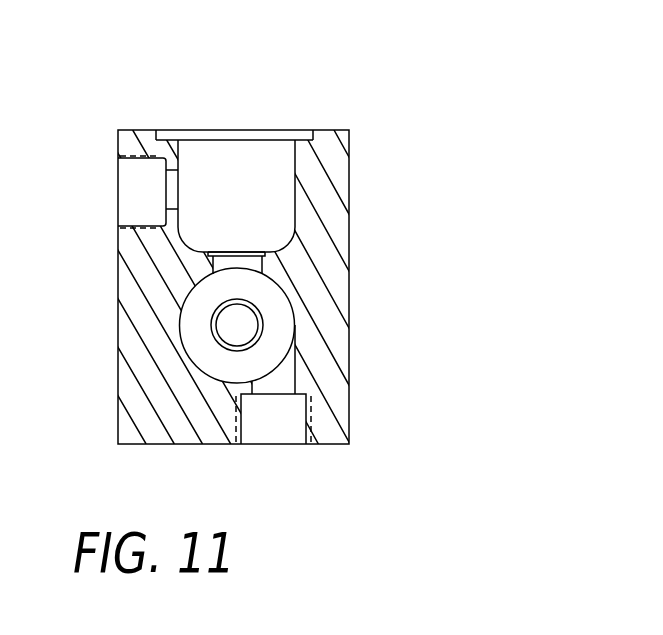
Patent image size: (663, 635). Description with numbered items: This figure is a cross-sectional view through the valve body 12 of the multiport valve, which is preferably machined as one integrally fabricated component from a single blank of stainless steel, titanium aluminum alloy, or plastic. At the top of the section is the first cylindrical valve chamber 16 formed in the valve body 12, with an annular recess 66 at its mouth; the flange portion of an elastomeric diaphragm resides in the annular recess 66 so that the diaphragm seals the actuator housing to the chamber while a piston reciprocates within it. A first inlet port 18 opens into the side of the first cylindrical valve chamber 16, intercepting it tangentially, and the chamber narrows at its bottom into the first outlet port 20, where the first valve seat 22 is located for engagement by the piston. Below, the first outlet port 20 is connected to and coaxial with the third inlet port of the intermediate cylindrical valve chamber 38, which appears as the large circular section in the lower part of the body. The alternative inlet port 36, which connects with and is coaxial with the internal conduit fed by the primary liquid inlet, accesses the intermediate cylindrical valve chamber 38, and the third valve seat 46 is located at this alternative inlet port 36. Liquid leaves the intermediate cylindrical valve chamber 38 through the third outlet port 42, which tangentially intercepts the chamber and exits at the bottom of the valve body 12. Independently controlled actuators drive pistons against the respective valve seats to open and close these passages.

The valve body 12 is at (405, 98).
The annular recess 66 is at (205, 132).
The first cylindrical valve chamber 16 is at (272, 158).
The first inlet port 18 is at (172, 183).
The first outlet port 20 is at (233, 252).
The first valve seat 22 is at (266, 252).
The intermediate cylindrical valve chamber 38 is at (280, 335).
The third valve seat 46 is at (228, 335).
The alternative inlet port 36 is at (218, 336).
The third outlet port 42 is at (275, 435).